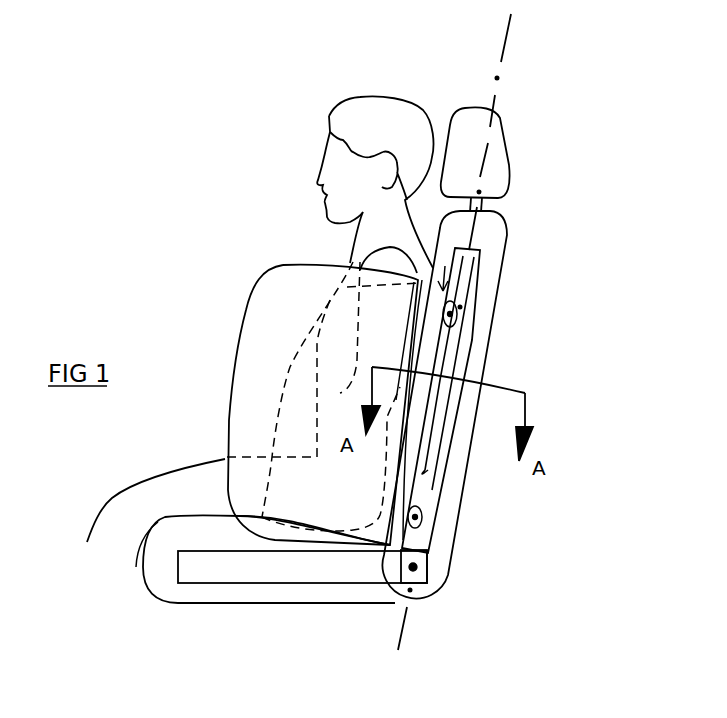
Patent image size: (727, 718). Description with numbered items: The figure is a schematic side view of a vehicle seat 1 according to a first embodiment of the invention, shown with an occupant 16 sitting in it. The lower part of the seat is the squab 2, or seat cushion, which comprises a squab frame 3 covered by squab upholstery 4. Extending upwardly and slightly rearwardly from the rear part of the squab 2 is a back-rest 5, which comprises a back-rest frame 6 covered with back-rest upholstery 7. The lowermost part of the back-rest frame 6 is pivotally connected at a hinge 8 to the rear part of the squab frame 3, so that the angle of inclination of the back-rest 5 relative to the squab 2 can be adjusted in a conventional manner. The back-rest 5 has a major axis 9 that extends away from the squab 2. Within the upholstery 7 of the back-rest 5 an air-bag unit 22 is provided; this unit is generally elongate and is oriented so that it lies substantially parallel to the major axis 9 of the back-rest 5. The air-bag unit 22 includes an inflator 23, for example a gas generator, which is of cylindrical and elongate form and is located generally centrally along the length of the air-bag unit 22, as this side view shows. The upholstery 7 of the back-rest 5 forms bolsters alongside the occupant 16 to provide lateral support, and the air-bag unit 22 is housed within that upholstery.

The vehicle seat 1 is at (557, 113).
The squab 2 is at (157, 598).
The squab frame 3 is at (223, 573).
The squab upholstery 4 is at (153, 562).
The back-rest 5 is at (507, 250).
The back-rest frame 6 is at (467, 280).
The back-rest upholstery 7 is at (475, 352).
The hinge 8 is at (413, 567).
The major axis 9 is at (507, 42).
The occupant 16 is at (363, 230).
The air-bag unit 22 is at (440, 230).
The inflator 23 is at (432, 420).